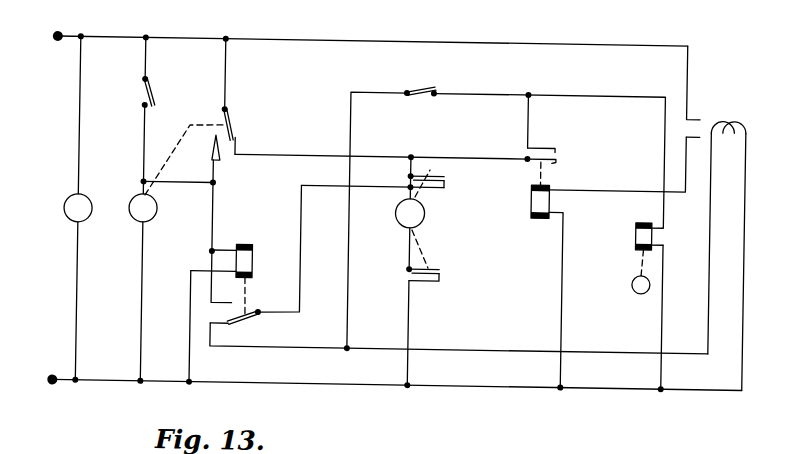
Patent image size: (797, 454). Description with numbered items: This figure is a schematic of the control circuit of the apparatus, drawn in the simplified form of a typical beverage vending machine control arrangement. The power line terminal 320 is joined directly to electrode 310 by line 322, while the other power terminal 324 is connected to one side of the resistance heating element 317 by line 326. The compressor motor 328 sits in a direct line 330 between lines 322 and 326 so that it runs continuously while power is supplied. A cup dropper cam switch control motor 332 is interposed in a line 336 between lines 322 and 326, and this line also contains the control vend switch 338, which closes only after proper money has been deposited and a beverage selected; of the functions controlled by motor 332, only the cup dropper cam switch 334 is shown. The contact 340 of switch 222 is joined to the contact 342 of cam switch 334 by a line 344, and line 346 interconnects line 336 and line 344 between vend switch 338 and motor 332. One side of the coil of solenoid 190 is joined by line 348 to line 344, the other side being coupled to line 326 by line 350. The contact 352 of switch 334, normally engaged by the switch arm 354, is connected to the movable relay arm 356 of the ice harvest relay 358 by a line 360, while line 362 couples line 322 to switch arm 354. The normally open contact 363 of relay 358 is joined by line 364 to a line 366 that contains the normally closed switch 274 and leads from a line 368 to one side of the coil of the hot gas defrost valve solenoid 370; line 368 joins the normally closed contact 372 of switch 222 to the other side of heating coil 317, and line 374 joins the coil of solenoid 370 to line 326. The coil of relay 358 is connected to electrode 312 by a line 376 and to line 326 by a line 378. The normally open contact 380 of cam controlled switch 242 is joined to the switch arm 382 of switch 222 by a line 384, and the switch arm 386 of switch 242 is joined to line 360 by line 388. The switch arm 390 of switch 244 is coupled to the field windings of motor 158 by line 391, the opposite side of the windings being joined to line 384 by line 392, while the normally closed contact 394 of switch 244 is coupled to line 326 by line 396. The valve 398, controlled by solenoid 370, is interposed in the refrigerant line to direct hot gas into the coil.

The motor 158 is at (423, 222).
The solenoid 190 is at (254, 264).
The switch 222 is at (260, 314).
The cam controlled switch 242 is at (410, 176).
The switch 244 is at (410, 269).
The normally closed switch 274 is at (402, 89).
The electrode 310 is at (691, 113).
The electrode 312 is at (696, 136).
The resistance heating element 317 is at (734, 115).
The power line terminal 320 is at (55, 47).
The line 322 is at (326, 39).
The power terminal 324 is at (55, 389).
The line 326 is at (446, 386).
The compressor motor 328 is at (72, 227).
The direct line 330 is at (77, 142).
The cam switch control motor 332 is at (140, 226).
The cup dropper cam switch 334 is at (229, 111).
The line 336 is at (142, 312).
The control vend switch 338 is at (144, 88).
The contact 340 is at (240, 310).
The contact 342 is at (216, 143).
The line 344 is at (213, 226).
The line 346 is at (188, 186).
The line 348 is at (238, 249).
The line 350 is at (190, 368).
The contact 352 is at (234, 140).
The switch arm 354 is at (233, 125).
The movable relay arm 356 is at (556, 159).
The ice harvest relay 358 is at (534, 217).
The line 360 is at (363, 156).
The line 362 is at (221, 74).
The normally open contact 363 is at (554, 146).
The line 364 is at (527, 123).
The line 366 is at (491, 80).
The line 368 is at (442, 349).
The hot gas defrost valve solenoid 370 is at (636, 231).
The normally closed contact 372 is at (230, 325).
The line 374 is at (664, 316).
The line 376 is at (595, 187).
The line 378 is at (564, 307).
The normally open contact 380 is at (445, 189).
The switch arm 382 is at (239, 323).
The line 384 is at (322, 189).
The switch arm 386 is at (416, 177).
The line 388 is at (410, 158).
The switch arm 390 is at (429, 269).
The line 391 is at (410, 238).
The line 392 is at (396, 203).
The normally closed contact 394 is at (441, 280).
The line 396 is at (410, 318).
The valve 398 is at (636, 289).